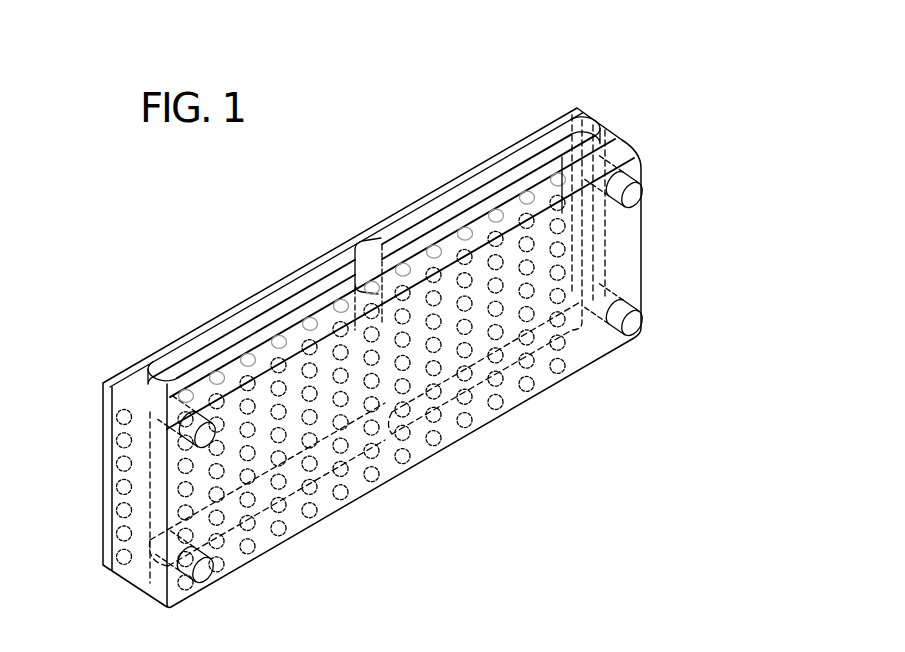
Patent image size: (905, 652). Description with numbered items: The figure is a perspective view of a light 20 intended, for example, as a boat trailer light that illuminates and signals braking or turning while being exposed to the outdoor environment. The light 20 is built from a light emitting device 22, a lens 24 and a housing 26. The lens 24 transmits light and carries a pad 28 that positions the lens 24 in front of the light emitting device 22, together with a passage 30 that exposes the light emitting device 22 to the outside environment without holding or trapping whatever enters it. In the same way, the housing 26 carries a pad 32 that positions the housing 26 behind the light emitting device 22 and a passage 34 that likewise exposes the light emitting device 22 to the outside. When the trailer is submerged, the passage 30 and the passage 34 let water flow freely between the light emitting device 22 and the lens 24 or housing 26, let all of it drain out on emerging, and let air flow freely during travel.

The light 20 is at (649, 84).
The light emitting device 22 is at (383, 250).
The lens 24 is at (650, 240).
The housing 26 is at (157, 352).
The pad 28 is at (618, 142).
The passage 30 is at (535, 186).
The pad 32 is at (570, 137).
The passage 34 is at (497, 170).